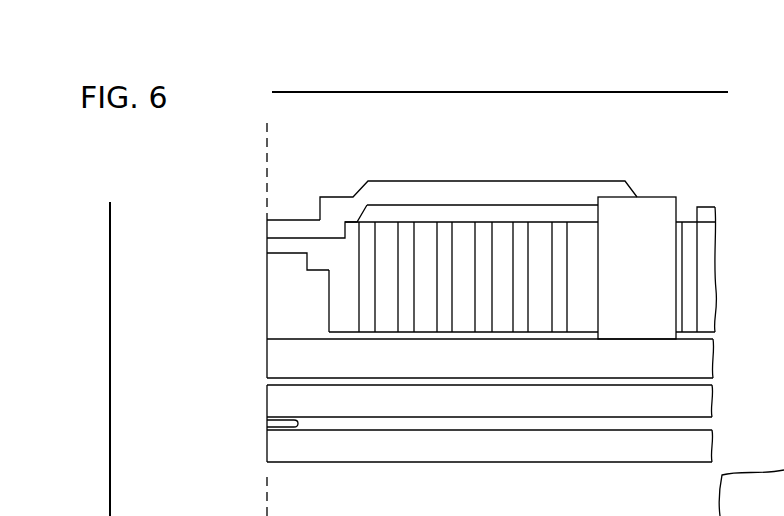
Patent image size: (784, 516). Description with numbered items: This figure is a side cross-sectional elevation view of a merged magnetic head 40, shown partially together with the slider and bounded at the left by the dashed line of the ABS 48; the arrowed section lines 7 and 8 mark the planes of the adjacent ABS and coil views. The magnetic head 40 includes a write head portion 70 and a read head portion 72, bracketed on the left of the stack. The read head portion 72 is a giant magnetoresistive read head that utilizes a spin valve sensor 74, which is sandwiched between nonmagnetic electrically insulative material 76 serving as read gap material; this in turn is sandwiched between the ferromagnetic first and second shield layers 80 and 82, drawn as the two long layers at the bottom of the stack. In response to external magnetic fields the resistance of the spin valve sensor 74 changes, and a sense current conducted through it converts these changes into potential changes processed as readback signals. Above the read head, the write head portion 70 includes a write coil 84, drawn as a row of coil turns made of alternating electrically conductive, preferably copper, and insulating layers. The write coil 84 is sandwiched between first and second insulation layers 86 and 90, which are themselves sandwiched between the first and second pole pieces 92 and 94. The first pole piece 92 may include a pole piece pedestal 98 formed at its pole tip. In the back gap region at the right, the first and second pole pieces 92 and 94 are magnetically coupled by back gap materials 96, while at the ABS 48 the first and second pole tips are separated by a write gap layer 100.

The section line 7- 7 is at (85, 252).
The section line 8- 8 is at (293, 68).
The magnetic head 40 is at (370, 152).
The ABS 48 is at (267, 157).
The write head portion 70 is at (200, 218).
The read head portion 72 is at (258, 388).
The spin valve sensor 74 is at (283, 428).
The nonmagnetic electrically insulative material 76 is at (367, 422).
The first shield layer 80 is at (540, 445).
The second shield layer 82 is at (593, 400).
The write coil 84 is at (524, 225).
The first insulation layer 86 is at (425, 335).
The second insulation layer 90 is at (440, 212).
The first pole piece 92 is at (300, 357).
The second pole piece 94 is at (290, 228).
The back gap materials 96 is at (633, 225).
The pole piece pedestal 98 is at (307, 288).
The write gap layer 100 is at (267, 250).